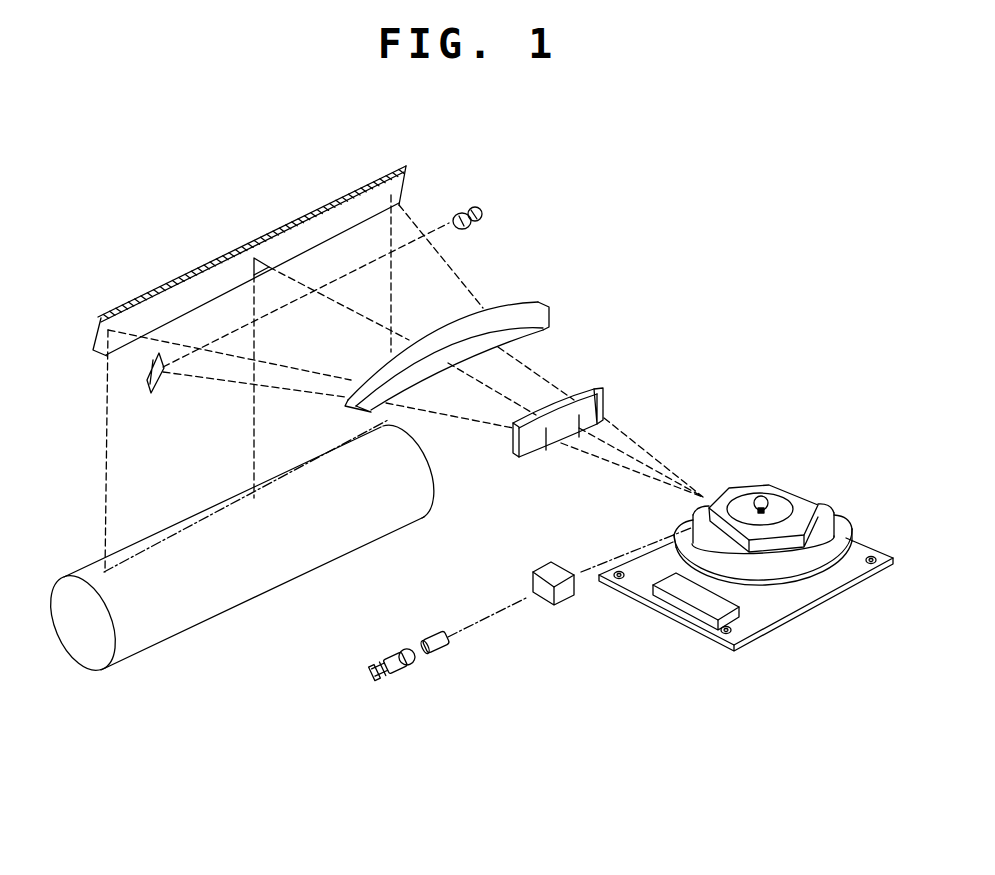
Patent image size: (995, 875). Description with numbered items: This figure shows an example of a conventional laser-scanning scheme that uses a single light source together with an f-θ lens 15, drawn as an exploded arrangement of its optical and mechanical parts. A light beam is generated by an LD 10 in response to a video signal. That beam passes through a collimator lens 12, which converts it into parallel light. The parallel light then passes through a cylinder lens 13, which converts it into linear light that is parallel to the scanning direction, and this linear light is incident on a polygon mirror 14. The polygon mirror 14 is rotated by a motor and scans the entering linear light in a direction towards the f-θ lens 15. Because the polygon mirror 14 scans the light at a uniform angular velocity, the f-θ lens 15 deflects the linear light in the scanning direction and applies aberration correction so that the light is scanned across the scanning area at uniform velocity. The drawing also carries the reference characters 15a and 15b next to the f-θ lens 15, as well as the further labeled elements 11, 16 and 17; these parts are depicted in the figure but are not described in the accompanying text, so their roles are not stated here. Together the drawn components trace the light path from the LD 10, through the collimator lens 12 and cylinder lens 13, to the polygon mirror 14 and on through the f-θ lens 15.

The LD 10 is at (403, 675).
The lamp 11 is at (438, 653).
The collimator lens 12 is at (572, 602).
The cylinder lens 13 is at (768, 486).
The polygon mirror 14 is at (825, 520).
The f-θ lens 15 is at (597, 392).
The first lens 15a is at (604, 410).
The second lens 15b is at (521, 302).
The reflector plate 16 is at (183, 278).
The cylindrical light guide 17 is at (183, 618).